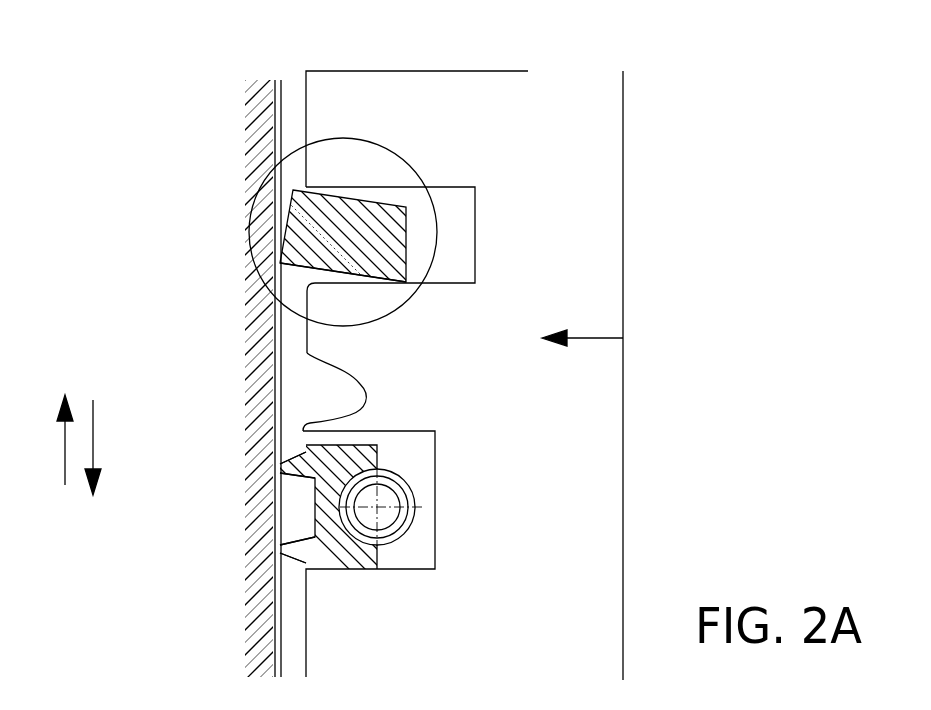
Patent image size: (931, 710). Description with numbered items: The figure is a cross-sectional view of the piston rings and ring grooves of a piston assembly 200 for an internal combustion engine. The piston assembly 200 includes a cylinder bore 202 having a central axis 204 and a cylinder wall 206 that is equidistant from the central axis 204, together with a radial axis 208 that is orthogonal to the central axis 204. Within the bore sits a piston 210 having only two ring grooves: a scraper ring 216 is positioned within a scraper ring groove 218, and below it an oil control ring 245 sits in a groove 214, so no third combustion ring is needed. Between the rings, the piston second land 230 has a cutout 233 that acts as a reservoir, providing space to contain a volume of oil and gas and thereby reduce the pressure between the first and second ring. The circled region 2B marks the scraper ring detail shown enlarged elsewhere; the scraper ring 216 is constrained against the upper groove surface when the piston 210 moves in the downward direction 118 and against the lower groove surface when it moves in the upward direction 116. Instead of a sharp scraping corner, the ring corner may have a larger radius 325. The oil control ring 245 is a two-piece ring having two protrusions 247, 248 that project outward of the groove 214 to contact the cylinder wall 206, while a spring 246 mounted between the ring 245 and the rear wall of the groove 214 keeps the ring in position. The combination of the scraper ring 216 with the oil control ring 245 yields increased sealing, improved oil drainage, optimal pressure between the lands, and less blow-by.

The piston assembly 200 is at (209, 140).
The cylinder bore 202 is at (372, 48).
The central axis 204 is at (625, 383).
The cylinder wall 206 is at (257, 93).
The radial axis 208 is at (582, 326).
The piston 210 is at (485, 71).
The groove 214 is at (425, 452).
The scraper ring 216 is at (383, 213).
The scraper ring groove 218 is at (463, 222).
The piston second land 230 is at (307, 331).
The cutout 233 is at (350, 384).
The oil control ring 245 is at (336, 556).
The spring 246 is at (400, 540).
The protrusion 247 is at (283, 470).
The protrusion 248 is at (298, 549).
The radius 325 is at (280, 264).
The upward direction 116 is at (65, 457).
The downward direction 118 is at (93, 425).
The detail view 2B is at (245, 225).